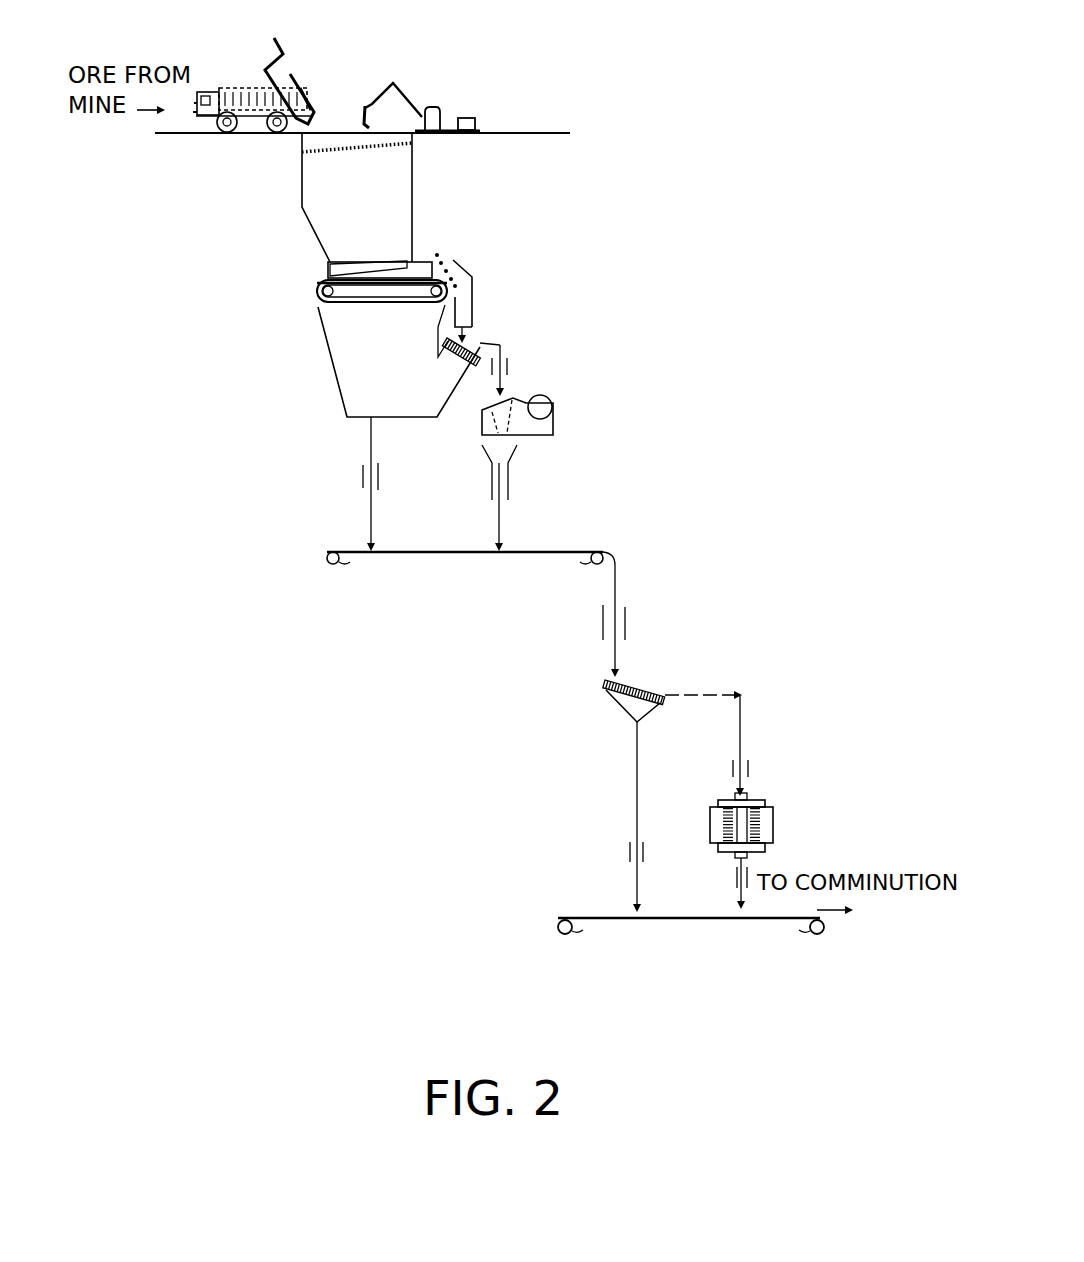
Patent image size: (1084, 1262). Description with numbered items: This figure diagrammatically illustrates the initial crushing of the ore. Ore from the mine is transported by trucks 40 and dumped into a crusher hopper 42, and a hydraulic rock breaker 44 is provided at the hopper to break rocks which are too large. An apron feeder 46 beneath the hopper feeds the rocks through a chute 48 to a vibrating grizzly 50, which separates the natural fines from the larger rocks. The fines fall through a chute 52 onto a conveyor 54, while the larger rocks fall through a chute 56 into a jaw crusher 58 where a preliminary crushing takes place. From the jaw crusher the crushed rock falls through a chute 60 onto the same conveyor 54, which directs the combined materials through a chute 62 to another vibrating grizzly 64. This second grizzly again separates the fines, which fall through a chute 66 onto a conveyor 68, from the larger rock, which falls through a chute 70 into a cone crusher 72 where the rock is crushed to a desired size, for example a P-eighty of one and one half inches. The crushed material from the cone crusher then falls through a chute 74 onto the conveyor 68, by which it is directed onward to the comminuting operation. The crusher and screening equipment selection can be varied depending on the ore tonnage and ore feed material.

The trucks 40 is at (303, 128).
The crusher hopper 42 is at (398, 204).
The hydraulic rock breaker 44 is at (440, 112).
The apron feeder 46 is at (327, 272).
The chute 48 is at (463, 293).
The vibrating grizzly 50 is at (467, 343).
The chute 52 is at (363, 480).
The conveyor 54 is at (437, 552).
The chute 56 is at (507, 363).
The jaw crusher 58 is at (547, 427).
The chute 60 is at (510, 483).
The chute 62 is at (627, 622).
The vibrating grizzly 64 is at (637, 688).
The chute 66 is at (628, 858).
The conveyor 68 is at (677, 918).
The chute 70 is at (748, 768).
The cone crusher 72 is at (767, 827).
The chute 74 is at (735, 877).